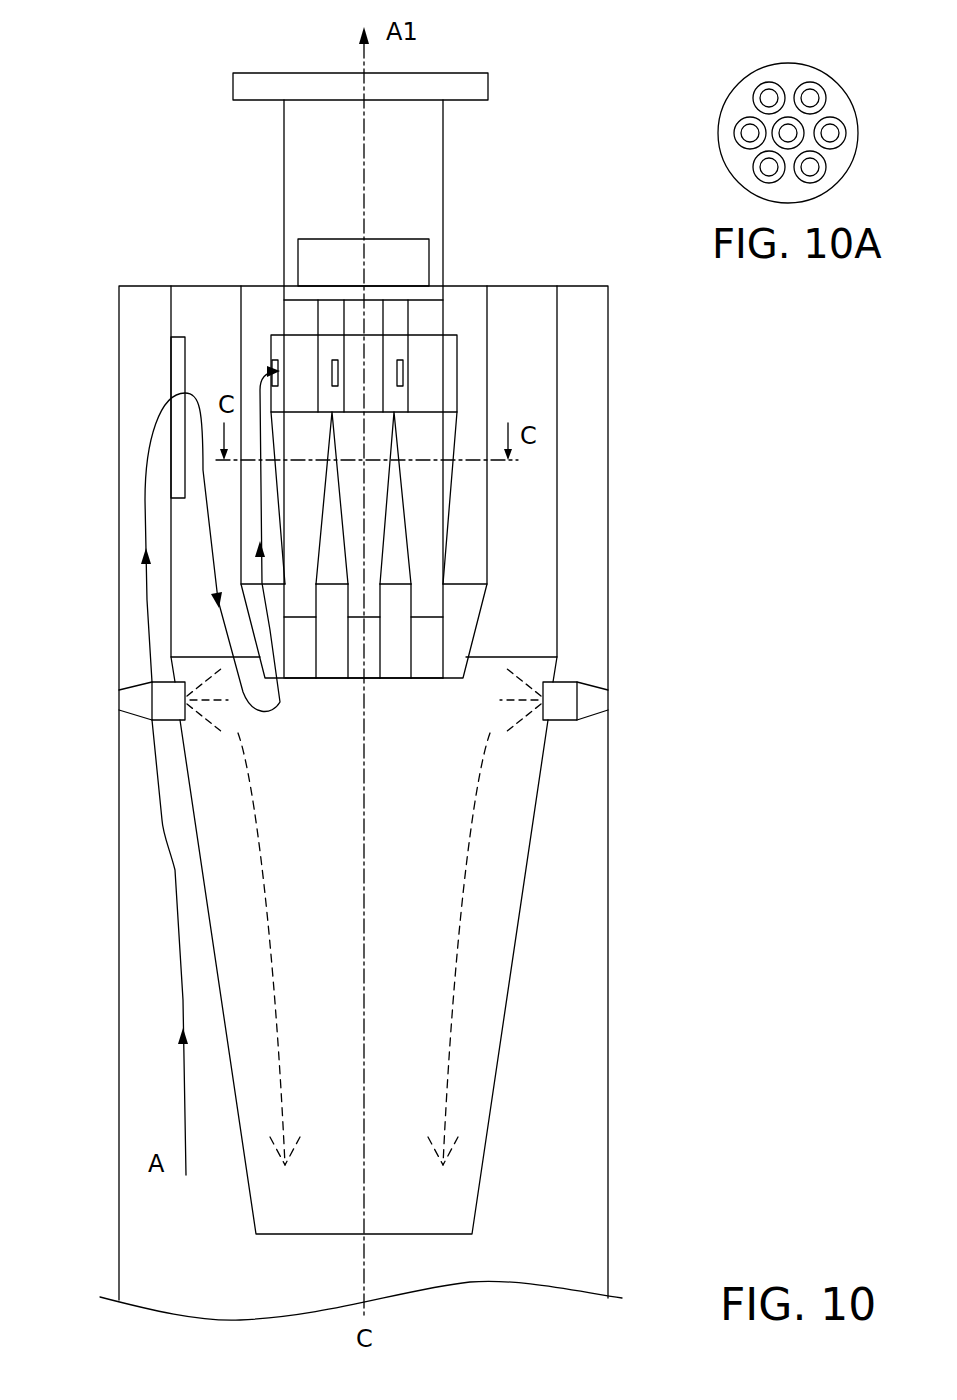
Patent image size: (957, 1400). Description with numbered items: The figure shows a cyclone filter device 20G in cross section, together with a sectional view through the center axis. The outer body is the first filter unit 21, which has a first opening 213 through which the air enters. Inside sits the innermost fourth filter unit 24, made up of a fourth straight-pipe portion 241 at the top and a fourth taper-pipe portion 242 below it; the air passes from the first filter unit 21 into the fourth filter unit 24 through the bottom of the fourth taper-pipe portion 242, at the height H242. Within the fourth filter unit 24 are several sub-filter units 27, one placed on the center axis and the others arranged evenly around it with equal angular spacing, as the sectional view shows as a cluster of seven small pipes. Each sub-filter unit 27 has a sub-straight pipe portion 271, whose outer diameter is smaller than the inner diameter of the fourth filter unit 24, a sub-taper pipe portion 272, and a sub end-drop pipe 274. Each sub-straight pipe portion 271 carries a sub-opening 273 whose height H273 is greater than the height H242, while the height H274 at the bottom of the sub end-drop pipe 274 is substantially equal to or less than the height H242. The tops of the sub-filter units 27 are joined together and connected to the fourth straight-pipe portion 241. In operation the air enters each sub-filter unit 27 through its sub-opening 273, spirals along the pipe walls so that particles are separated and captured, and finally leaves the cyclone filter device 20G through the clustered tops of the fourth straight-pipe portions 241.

In FIG. 10, the first filter unit 21 is at (166, 304).
In FIG. 10, the first opening 213 is at (177, 368).
In FIG. 10, the innermost fourth filter unit 24 is at (331, 692).
In FIG. 10A, the innermost fourth filter unit 24 is at (746, 73).
In FIG. 10, the fourth straight-pipe portion 241 is at (283, 207).
In FIG. 10, the fourth taper-pipe portion 242 is at (398, 670).
In FIG. 10, the sub-filter unit 27 is at (520, 536).
In FIG. 10A, the sub-filter unit 27 is at (788, 118).
In FIG. 10, the sub-straight pipe portion 271 is at (448, 397).
In FIG. 10, the sub-taper pipe portion 272 is at (440, 528).
In FIG. 10, the sub-opening 273 is at (402, 370).
In FIG. 10, the sub end-drop pipe 274 is at (483, 678).
In FIG. 10, the height of the sub-opening H273 is at (400, 385).
In FIG. 10, the height at the bottom of the fourth taper-pipe portion H242 is at (466, 678).
In FIG. 10, the height at the bottom of the sub end-drop pipe H274 is at (527, 680).
In FIG. 10, the cyclone filter device 20G is at (534, 866).